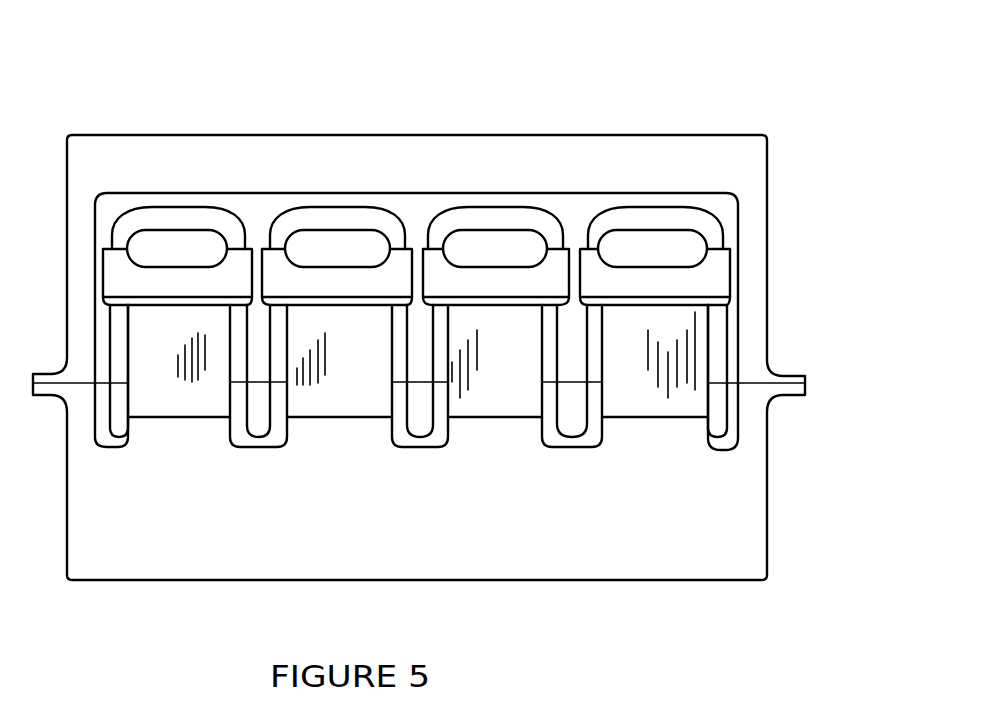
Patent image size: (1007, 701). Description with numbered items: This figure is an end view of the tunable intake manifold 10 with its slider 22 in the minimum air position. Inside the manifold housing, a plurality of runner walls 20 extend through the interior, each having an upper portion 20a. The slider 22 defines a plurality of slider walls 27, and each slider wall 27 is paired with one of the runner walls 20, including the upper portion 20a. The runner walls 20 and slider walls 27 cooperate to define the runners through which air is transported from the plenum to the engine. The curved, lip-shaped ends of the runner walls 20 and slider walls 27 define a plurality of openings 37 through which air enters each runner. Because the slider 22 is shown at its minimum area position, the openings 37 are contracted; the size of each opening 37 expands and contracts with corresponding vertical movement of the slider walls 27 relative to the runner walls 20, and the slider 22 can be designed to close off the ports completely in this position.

The tunable intake manifold 10 is at (788, 283).
The runner walls 20 is at (713, 222).
The upper portion 20a is at (180, 228).
The slider 22 is at (170, 298).
The slider walls 27 is at (148, 265).
The openings 37 is at (207, 243).